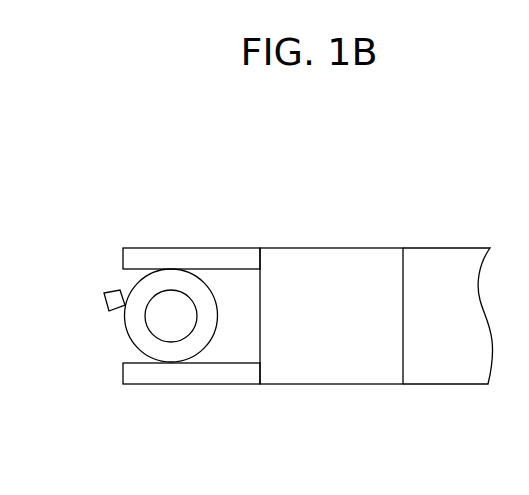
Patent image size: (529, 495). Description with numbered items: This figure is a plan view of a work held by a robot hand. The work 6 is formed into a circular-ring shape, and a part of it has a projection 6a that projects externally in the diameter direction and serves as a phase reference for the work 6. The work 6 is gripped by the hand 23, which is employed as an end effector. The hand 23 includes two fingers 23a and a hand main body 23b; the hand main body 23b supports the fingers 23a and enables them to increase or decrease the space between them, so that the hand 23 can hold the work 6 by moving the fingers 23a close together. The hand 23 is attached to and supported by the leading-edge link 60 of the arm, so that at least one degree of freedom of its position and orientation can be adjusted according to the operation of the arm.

The hand 23 is at (362, 190).
The fingers 23a is at (198, 248).
The hand main body 23b is at (310, 248).
The leading-edge link 60 is at (450, 249).
The work 6 is at (127, 336).
The projection 6a is at (104, 295).